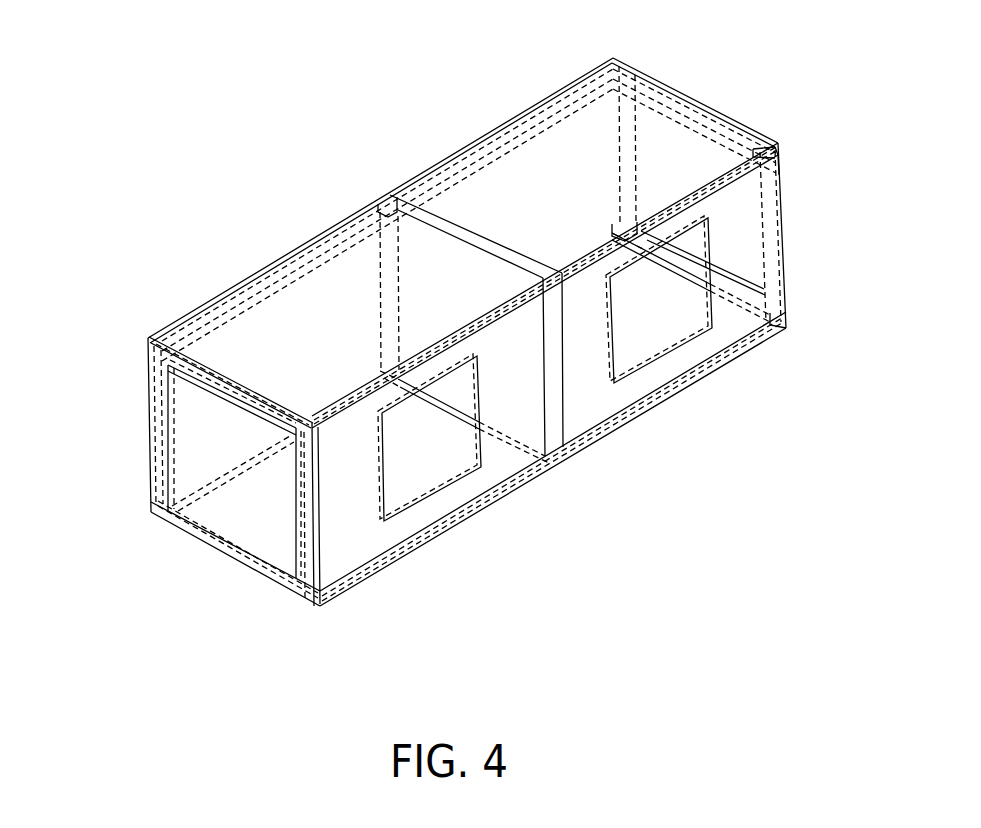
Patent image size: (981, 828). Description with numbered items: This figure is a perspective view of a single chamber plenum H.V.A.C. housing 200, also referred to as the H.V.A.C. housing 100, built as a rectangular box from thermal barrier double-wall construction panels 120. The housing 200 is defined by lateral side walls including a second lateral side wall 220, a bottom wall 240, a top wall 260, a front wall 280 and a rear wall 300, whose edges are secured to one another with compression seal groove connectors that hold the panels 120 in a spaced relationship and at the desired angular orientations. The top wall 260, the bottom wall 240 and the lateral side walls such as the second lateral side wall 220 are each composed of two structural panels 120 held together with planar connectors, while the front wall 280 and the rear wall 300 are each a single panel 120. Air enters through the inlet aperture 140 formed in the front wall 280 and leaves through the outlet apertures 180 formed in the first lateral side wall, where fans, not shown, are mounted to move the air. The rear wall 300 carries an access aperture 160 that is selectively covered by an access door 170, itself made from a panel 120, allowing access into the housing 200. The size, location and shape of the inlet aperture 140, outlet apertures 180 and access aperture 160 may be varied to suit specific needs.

The H.V.A.C. housing 100 is at (314, 92).
The thermal barrier double-wall construction panel 120 is at (593, 108).
The inlet aperture 140 is at (780, 172).
The access aperture 160 is at (248, 518).
The access door 170 is at (275, 537).
The outlet aperture 180 is at (655, 322).
The H.V.A.C. housing 200 is at (332, 228).
The second lateral side wall 220 is at (245, 313).
The bottom wall 240 is at (510, 460).
The top wall 260 is at (517, 163).
The front wall 280 is at (768, 278).
The rear wall 300 is at (443, 230).